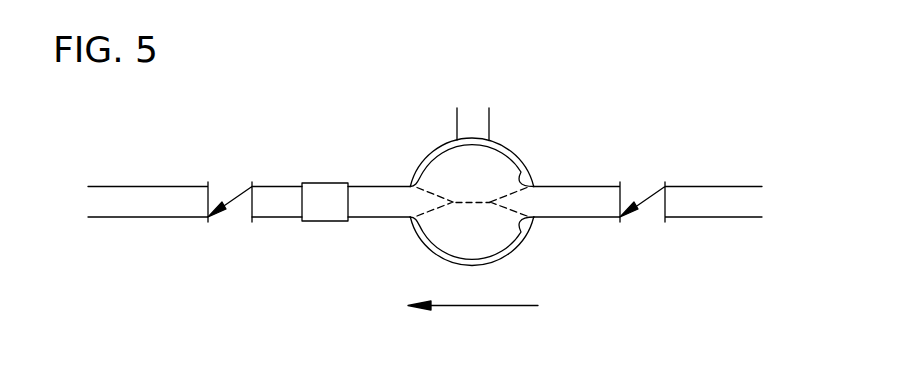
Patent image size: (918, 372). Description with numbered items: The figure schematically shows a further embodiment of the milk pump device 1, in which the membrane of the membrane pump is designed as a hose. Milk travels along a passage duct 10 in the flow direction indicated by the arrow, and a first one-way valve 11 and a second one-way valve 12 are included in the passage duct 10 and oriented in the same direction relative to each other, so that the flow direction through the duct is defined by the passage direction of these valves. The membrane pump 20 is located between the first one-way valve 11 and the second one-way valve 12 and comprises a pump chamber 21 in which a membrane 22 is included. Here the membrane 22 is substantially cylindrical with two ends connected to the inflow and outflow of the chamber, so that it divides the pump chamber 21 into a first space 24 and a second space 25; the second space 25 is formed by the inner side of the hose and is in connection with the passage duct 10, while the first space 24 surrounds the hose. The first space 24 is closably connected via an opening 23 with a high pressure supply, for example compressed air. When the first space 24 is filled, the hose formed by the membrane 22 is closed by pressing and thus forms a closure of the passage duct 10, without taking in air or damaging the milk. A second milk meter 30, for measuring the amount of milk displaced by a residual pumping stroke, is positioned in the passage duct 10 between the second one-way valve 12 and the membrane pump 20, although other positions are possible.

The milk pump device 1 is at (371, 142).
The passage duct 10 is at (567, 223).
The first one-way valve 11 is at (640, 193).
The second one-way valve 12 is at (225, 190).
The membrane pump 20 is at (525, 150).
The pump chamber 21 is at (506, 146).
The membrane 22 is at (516, 173).
The opening 23 is at (473, 123).
The first space 24 is at (435, 153).
The second space 25 is at (472, 188).
The second milk meter 30 is at (324, 182).